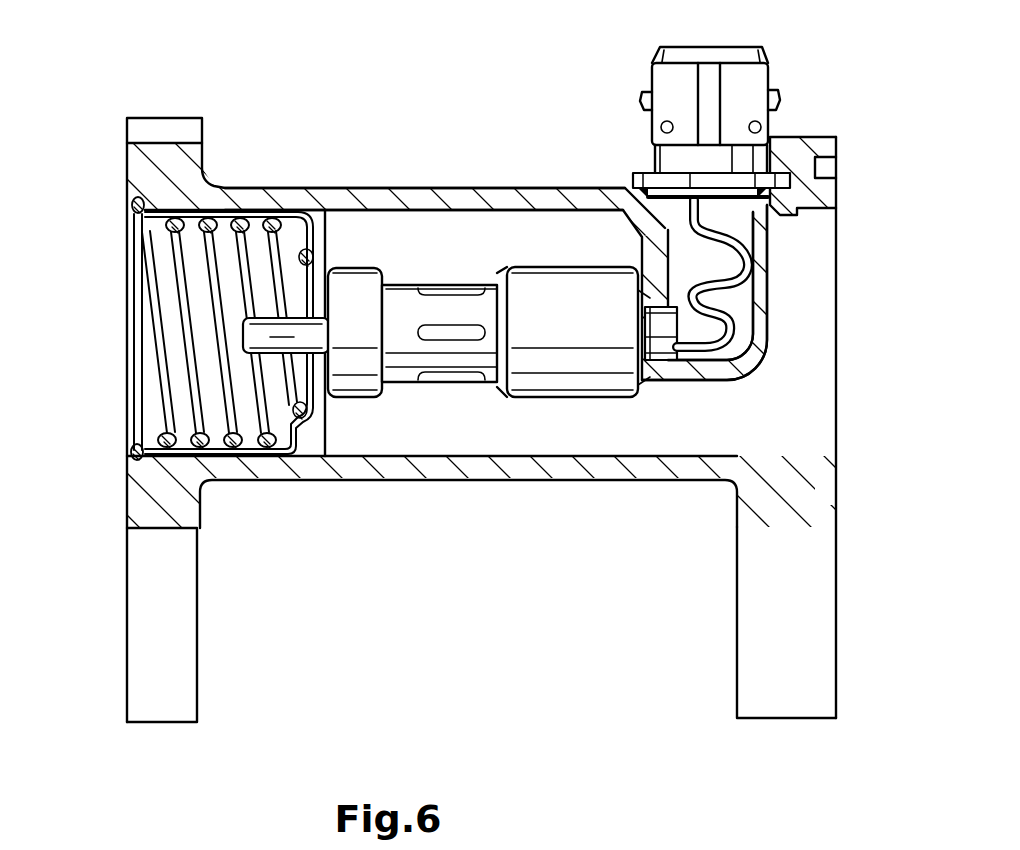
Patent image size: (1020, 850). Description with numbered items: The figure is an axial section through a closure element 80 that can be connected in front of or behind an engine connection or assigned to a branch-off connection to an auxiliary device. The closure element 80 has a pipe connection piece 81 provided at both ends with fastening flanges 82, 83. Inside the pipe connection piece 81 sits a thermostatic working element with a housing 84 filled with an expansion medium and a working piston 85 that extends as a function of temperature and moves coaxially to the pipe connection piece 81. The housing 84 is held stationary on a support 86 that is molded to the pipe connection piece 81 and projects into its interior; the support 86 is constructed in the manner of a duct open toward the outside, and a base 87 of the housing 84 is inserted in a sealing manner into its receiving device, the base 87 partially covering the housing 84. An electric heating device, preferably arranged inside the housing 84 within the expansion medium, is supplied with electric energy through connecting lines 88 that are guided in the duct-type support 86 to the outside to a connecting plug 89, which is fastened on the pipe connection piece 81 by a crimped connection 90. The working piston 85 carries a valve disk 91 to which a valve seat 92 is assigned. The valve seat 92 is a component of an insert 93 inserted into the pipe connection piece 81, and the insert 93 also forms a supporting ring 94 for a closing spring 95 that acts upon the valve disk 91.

The closure element 80 is at (489, 482).
The pipe connection piece 81 is at (430, 197).
The fastening flange 82 is at (124, 612).
The fastening flange 83 is at (825, 620).
The housing 84 is at (458, 300).
The working piston 85 is at (285, 460).
The support 86 is at (740, 382).
The base 87 is at (665, 362).
The connecting lines 88 is at (767, 290).
The connecting plug 89 is at (763, 72).
The crimped connection 90 is at (638, 176).
The valve disk 91 is at (320, 268).
The valve seat 92 is at (280, 212).
The insert 93 is at (236, 458).
The supporting ring 94 is at (132, 452).
The closing spring 95 is at (137, 200).